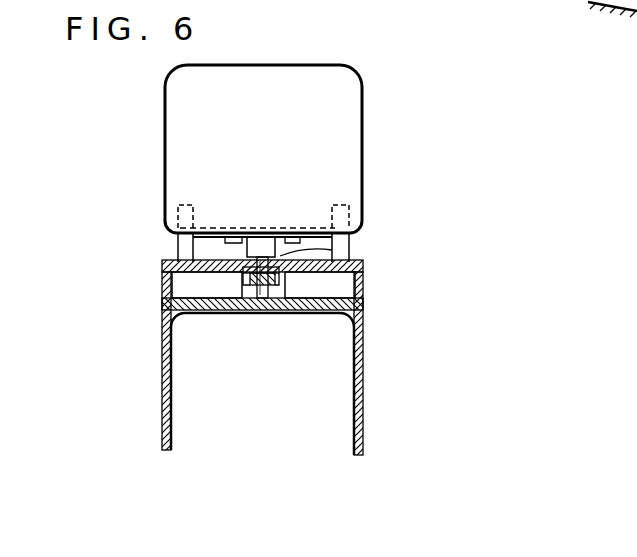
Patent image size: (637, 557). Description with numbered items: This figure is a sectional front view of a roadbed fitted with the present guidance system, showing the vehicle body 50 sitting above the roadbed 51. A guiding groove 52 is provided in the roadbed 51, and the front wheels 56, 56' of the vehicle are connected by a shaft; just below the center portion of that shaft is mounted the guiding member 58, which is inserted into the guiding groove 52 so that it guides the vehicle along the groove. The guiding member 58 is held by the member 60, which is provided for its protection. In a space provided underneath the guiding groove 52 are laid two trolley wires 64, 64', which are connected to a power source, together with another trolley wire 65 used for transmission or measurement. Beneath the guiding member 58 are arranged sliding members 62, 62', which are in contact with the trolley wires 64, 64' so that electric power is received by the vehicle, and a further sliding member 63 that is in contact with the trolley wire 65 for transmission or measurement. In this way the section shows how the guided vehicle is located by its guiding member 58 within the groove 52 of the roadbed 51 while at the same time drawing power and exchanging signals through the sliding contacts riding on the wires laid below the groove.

The cap housing 50 is at (362, 85).
The roadbed 51 is at (363, 290).
The guiding groove 52 is at (345, 258).
The front wheel 56 is at (340, 233).
The front wheel 56' is at (155, 232).
The guiding member 58 is at (240, 246).
The member 60 is at (262, 242).
The sliding member 62 is at (239, 309).
The sliding member 62' is at (286, 312).
The sliding member 63 is at (258, 293).
The trolley wire 64 is at (208, 286).
The trolley wire 64' is at (317, 286).
The trolley wire 65 is at (265, 293).